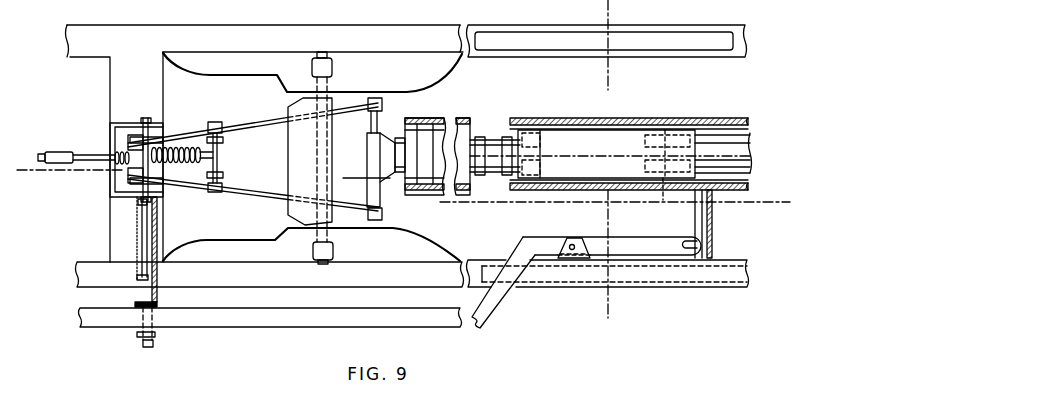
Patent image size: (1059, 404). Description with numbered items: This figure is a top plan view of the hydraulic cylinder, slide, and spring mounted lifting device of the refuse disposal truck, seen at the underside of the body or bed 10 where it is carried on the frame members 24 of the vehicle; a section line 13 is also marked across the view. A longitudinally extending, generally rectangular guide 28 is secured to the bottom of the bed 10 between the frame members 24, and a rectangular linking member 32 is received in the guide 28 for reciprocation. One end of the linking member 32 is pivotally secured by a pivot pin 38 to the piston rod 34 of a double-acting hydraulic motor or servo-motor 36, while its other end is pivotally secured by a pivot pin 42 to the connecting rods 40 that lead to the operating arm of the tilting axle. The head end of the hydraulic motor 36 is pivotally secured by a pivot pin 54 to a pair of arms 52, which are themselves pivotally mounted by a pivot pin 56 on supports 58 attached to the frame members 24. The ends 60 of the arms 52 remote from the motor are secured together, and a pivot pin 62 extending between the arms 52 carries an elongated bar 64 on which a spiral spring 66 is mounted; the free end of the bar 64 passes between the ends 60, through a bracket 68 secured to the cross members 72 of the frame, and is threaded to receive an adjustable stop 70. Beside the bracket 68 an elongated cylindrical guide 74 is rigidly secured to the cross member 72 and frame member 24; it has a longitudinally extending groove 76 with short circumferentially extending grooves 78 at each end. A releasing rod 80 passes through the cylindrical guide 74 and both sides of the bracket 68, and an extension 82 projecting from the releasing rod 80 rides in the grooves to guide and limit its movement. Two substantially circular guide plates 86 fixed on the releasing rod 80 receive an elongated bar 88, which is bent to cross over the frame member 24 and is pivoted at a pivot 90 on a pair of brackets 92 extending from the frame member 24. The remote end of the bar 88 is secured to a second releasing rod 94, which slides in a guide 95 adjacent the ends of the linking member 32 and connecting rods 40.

The body or bed 10 is at (25, 170).
The section line 13 is at (610, 4).
The frame members 24 is at (403, 33).
The guide 28 is at (543, 106).
The linking member 32 is at (590, 162).
The piston rod 34 is at (493, 150).
The double-acting hydraulic motor or servo-motor 36 is at (427, 120).
The pivot pin 38 is at (528, 182).
The connecting rods 40 is at (740, 167).
The pivot pin 42 is at (655, 198).
The arms 52 is at (258, 127).
The pivot pin 54 is at (378, 128).
The pivot pin 56 is at (324, 52).
The supports 58 is at (423, 63).
The ends of arms 60 is at (130, 137).
The pivot pin 62 is at (217, 123).
The elongated bar 64 is at (95, 155).
The spiral spring 66 is at (187, 147).
The bracket 68 is at (108, 133).
The adjustable stop 70 is at (60, 153).
The cross members 72 is at (110, 73).
The cylindrical guide 74 is at (157, 278).
The longitudinally extending groove 76 is at (147, 240).
The circumferentially extending grooves 78 is at (138, 200).
The releasing rod 80 is at (157, 298).
The extension 82 is at (157, 213).
The guide plates 86 is at (143, 335).
The elongated bar 88 is at (308, 323).
The pivot 90 is at (571, 240).
The brackets 92 is at (575, 239).
The second releasing rod 94 is at (705, 242).
The guide 95 is at (712, 222).